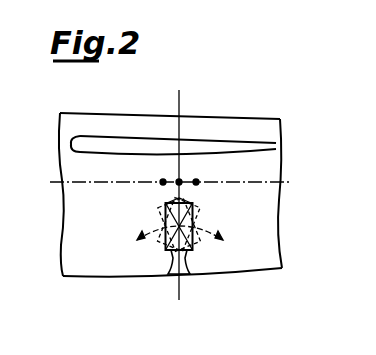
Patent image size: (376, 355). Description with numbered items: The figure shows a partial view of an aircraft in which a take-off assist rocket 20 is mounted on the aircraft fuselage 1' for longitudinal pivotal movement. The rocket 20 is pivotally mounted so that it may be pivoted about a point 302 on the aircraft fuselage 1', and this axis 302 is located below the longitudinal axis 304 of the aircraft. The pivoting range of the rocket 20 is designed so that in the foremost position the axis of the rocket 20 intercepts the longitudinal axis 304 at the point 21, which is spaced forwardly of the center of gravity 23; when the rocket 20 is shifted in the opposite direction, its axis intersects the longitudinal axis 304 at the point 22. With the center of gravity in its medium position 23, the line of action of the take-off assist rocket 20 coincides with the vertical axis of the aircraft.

The aircraft fuselage 1' is at (153, 225).
The rocket 20 is at (180, 260).
The point 21 is at (163, 182).
The intersection point 22 is at (196, 182).
The center of gravity 23 is at (179, 182).
The pivot point 302 is at (148, 233).
The longitudinal axis 304 is at (292, 182).